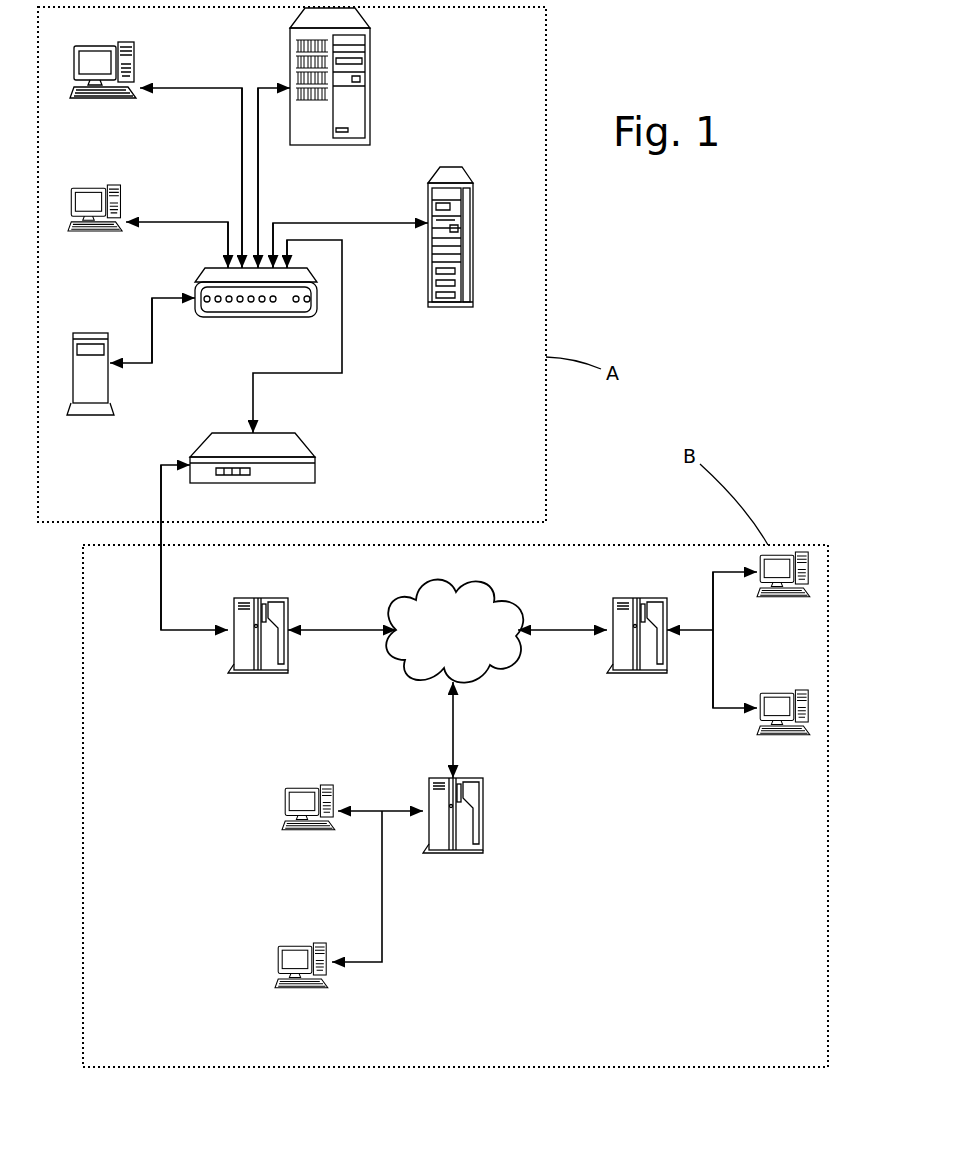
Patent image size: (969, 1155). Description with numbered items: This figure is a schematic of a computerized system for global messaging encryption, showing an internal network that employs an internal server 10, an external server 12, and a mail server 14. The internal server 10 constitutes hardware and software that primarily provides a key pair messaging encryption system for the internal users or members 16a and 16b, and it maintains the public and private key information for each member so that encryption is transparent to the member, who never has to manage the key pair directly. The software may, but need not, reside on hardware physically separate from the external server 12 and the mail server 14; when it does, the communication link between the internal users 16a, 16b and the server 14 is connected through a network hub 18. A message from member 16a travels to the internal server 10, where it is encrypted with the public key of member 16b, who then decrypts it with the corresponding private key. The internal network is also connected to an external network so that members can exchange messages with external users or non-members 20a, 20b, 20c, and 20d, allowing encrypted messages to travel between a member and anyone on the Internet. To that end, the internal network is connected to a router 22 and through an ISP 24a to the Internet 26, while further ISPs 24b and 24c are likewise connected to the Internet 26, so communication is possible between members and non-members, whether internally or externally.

The internal server 10 is at (368, 100).
The external server 12 is at (470, 175).
The mail server 14 is at (108, 385).
The internal user 16a is at (138, 63).
The internal user 16b is at (121, 205).
The network hub 18 is at (212, 322).
The external user 20a is at (282, 806).
The external user 20b is at (275, 960).
The external user 20c is at (775, 553).
The external user 20d is at (793, 706).
The router 22 is at (316, 458).
The ISP 24a is at (228, 646).
The ISP 24b is at (488, 808).
The ISP 24c is at (607, 641).
The Internet 26 is at (484, 594).